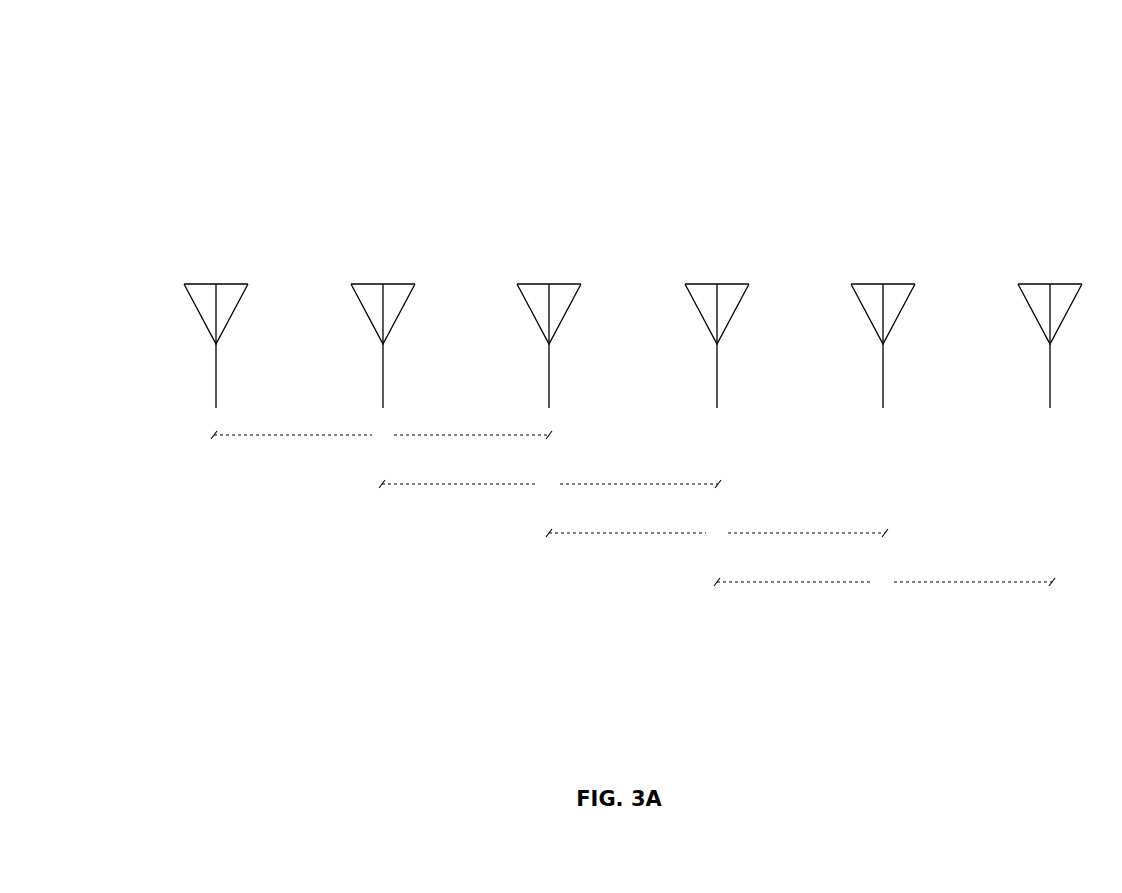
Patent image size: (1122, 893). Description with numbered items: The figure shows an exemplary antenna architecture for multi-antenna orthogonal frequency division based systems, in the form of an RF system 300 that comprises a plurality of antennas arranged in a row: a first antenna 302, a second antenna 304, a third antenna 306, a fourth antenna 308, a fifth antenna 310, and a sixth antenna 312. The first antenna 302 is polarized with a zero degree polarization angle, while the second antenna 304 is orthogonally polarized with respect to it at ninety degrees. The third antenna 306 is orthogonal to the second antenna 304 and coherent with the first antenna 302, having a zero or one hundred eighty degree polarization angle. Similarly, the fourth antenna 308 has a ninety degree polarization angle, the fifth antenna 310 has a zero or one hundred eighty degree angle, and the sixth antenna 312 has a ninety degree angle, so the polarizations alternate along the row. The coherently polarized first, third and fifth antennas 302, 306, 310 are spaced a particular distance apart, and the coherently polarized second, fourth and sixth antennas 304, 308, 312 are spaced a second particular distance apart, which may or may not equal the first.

The RF system 300 is at (266, 96).
The antenna 1 302 is at (205, 324).
The antenna 2 304 is at (372, 324).
The antenna 3 306 is at (538, 324).
The antenna 4 308 is at (706, 324).
The antenna 5 310 is at (872, 324).
The antenna 6 312 is at (1039, 324).